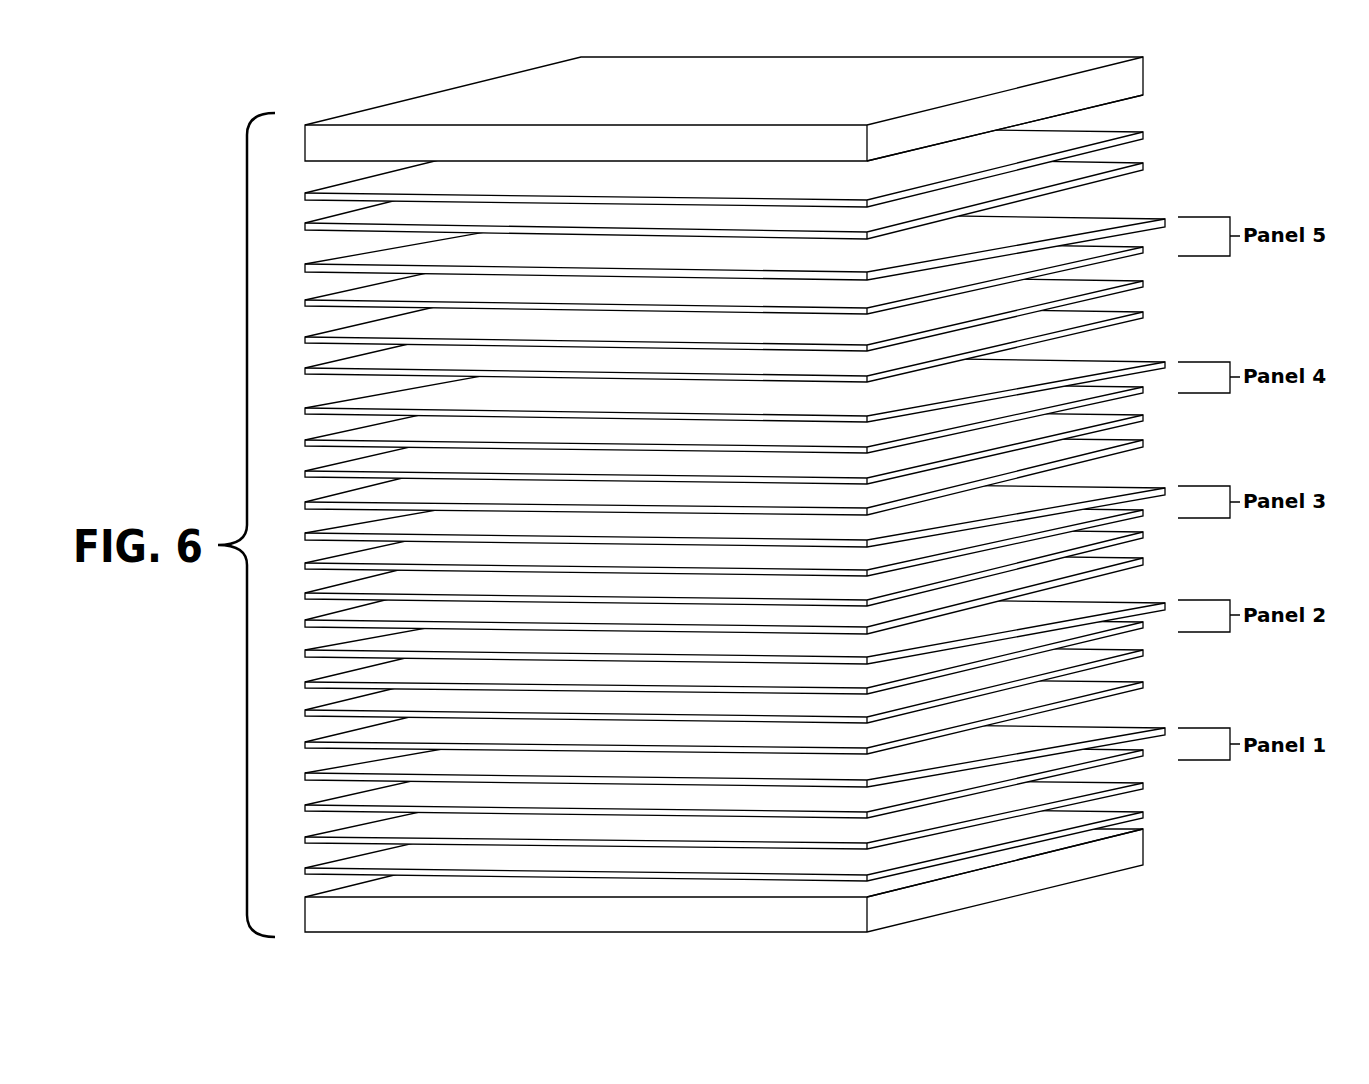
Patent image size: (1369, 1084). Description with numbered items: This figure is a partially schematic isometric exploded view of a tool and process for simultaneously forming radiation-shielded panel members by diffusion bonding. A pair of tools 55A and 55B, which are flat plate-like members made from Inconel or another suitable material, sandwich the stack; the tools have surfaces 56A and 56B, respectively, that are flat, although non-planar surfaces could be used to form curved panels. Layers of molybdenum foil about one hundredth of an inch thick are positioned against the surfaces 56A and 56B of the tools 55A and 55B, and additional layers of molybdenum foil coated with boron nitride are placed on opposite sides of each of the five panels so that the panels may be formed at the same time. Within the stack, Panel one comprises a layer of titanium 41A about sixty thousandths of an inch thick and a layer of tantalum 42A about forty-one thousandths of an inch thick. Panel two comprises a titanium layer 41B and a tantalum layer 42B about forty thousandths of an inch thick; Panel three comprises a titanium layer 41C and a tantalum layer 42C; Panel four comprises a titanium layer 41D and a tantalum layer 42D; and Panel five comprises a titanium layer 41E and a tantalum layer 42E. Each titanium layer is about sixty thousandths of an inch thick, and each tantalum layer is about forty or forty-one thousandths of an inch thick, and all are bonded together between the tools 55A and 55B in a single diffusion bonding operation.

The layer of titanium 41A is at (1133, 217).
The layer of tantalum 42A is at (1133, 253).
The titanium layer 41B is at (1138, 361).
The layer of tantalum 42B is at (1125, 393).
The layer of titanium 41C is at (1138, 487).
The layer of tantalum 42C is at (1125, 517).
The layer of titanium 41D is at (1142, 600).
The layer of tantalum 42D is at (1125, 627).
The layer of titanium 41E is at (1142, 725).
The layer of tantalum 42E is at (1125, 760).
The tool 55A is at (1143, 68).
The surface 56A is at (1116, 101).
The tool 55B is at (1143, 847).
The surface 56B is at (1010, 850).